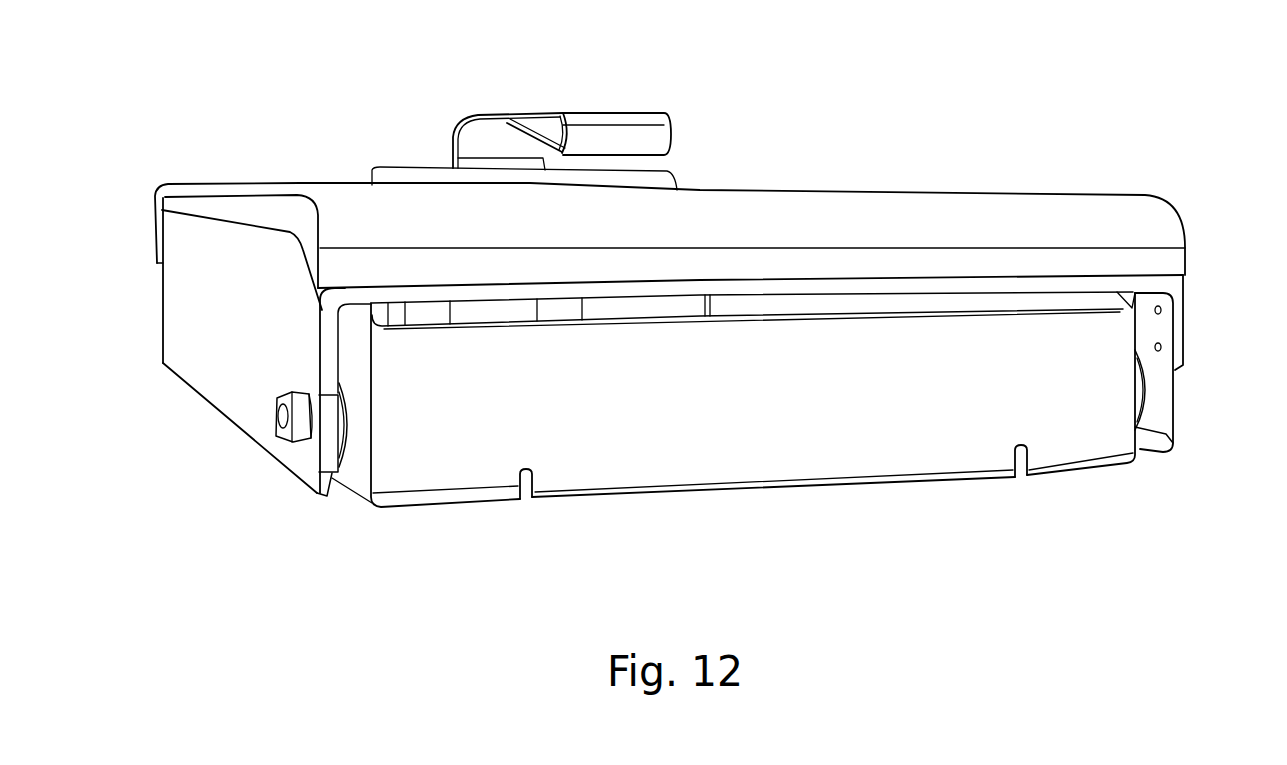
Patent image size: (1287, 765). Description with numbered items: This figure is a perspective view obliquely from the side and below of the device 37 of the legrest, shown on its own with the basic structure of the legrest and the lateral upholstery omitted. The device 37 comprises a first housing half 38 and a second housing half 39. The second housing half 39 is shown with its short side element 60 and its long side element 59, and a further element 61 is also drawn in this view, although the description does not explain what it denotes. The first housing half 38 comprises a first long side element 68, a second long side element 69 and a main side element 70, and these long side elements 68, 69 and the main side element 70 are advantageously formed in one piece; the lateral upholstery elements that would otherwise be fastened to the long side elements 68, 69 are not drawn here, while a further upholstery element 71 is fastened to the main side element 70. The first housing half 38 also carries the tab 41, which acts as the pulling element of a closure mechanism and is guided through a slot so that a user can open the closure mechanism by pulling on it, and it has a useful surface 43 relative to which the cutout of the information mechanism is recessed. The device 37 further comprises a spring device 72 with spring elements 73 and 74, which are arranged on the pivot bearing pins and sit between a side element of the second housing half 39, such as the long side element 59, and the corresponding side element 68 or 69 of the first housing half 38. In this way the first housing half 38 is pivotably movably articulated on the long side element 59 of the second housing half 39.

The device 37 is at (323, 520).
The first housing half 38 is at (198, 415).
The second housing half 39 is at (525, 520).
The tab 41 is at (632, 110).
The useful surface 43 is at (815, 189).
The long side element 59 is at (363, 482).
The short side element 60 is at (688, 462).
The rail 61 is at (475, 310).
The first long side element 68 is at (205, 367).
The second long side element 69 is at (1185, 330).
The main side element 70 is at (913, 285).
The further upholstery element 71 is at (155, 196).
The spring device 72 is at (1113, 500).
The spring element 73 is at (1147, 430).
The spring element 74 is at (340, 448).